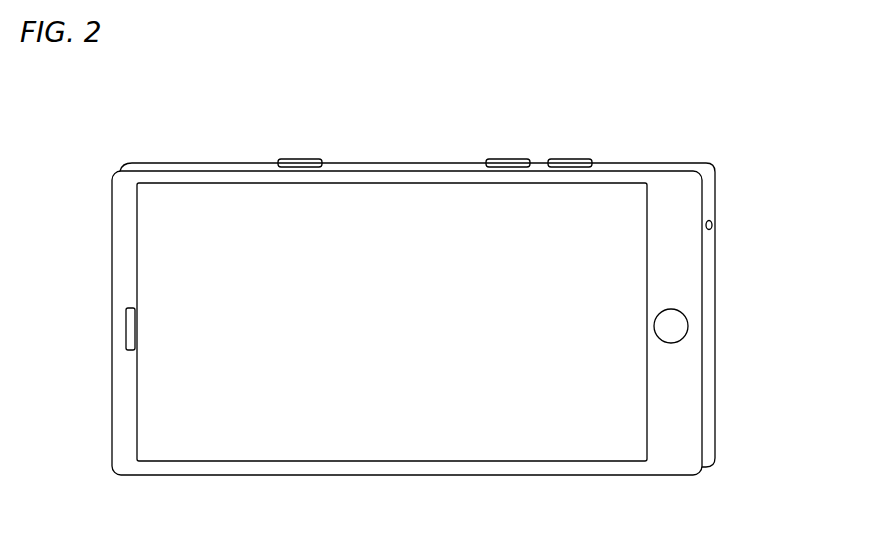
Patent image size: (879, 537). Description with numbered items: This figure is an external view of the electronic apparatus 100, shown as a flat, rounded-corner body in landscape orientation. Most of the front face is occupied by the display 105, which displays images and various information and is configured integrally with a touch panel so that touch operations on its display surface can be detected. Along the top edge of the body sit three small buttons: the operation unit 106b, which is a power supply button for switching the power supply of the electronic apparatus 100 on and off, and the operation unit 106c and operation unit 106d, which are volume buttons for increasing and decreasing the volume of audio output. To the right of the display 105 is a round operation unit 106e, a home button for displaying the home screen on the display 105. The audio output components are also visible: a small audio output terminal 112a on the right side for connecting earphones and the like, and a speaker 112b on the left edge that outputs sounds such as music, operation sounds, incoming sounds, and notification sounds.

The electronic apparatus 100 is at (676, 418).
The display 105 is at (217, 200).
The operation unit 106b is at (290, 160).
The operation unit 106c is at (497, 160).
The operation unit 106d is at (587, 160).
The operation unit 106e is at (672, 322).
The audio output terminal 112a is at (712, 222).
The speaker 112b is at (127, 320).